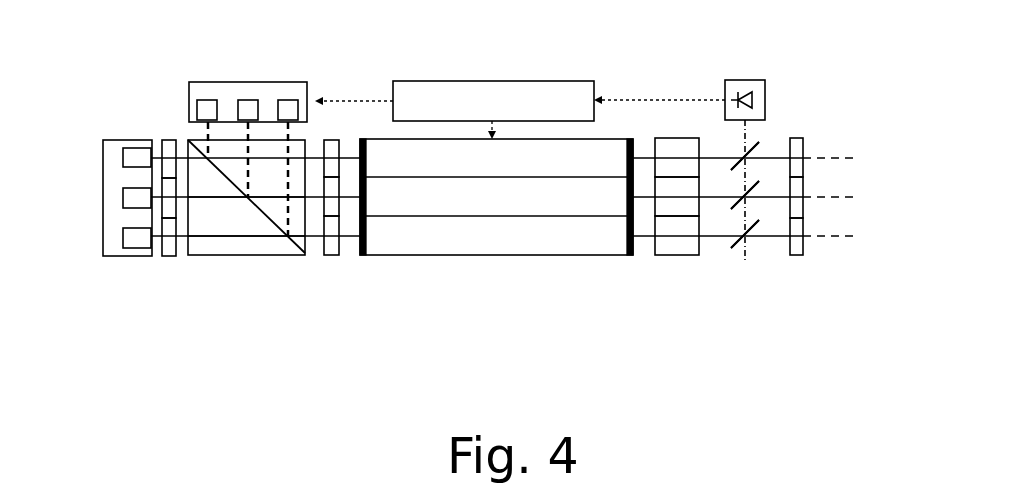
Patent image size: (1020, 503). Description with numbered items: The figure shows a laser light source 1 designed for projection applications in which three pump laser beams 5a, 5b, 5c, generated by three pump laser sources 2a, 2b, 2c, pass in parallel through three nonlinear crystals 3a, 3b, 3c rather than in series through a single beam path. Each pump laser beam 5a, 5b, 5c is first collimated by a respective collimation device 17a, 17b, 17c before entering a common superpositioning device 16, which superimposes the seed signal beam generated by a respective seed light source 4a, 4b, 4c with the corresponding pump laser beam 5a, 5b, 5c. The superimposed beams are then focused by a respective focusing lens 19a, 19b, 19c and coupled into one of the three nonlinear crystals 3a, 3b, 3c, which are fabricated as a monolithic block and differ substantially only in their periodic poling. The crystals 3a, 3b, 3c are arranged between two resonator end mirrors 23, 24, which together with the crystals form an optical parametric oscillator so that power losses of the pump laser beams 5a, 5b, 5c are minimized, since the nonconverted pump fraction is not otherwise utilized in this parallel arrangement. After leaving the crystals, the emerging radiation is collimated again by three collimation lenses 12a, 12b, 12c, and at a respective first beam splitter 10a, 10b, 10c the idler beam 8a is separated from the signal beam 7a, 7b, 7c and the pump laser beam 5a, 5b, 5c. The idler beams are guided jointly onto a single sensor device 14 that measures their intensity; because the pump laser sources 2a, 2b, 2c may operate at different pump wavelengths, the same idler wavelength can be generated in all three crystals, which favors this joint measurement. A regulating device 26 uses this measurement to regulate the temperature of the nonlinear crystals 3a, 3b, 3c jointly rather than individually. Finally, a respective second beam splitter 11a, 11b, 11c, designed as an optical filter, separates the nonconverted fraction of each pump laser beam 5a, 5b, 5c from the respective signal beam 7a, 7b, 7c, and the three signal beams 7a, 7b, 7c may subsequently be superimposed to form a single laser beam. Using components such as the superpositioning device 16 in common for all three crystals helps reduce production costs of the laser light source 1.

The laser light source 1 is at (104, 76).
The pump laser source 2a is at (133, 147).
The pump laser source 2b is at (124, 196).
The pump laser source 2c is at (128, 252).
The nonlinear crystal 3a is at (378, 139).
The nonlinear crystal 3b is at (420, 197).
The nonlinear crystal 3c is at (465, 220).
The seed light source 4a is at (208, 100).
The seed light source 4b is at (250, 100).
The seed light source 4c is at (290, 100).
The pump laser beam 5a is at (188, 143).
The pump laser beam 5b is at (207, 200).
The pump laser beam 5c is at (248, 237).
The signal beam 7a is at (186, 138).
The signal beam 7b is at (242, 146).
The signal beam 7c is at (286, 145).
The idler beam 8a is at (752, 140).
The first beam splitter 10a is at (762, 148).
The first beam splitter 10b is at (733, 207).
The first beam splitter 10c is at (745, 262).
The second beam splitter 11a is at (792, 170).
The second beam splitter 11b is at (797, 197).
The second beam splitter 11c is at (800, 222).
The collimation lens 12a is at (678, 143).
The collimation lens 12b is at (673, 200).
The collimation lens 12c is at (677, 245).
The sensor device 14 is at (743, 80).
The superpositioning device 16 is at (267, 222).
The collimation device 17a is at (168, 172).
The collimation device 17b is at (168, 208).
The collimation device 17c is at (165, 256).
The focusing lens 19a is at (335, 140).
The focusing lens 19b is at (330, 203).
The focusing lens 19c is at (329, 258).
The resonator end mirror 23 is at (360, 140).
The resonator end mirror 24 is at (631, 138).
The regulating device 26 is at (545, 100).